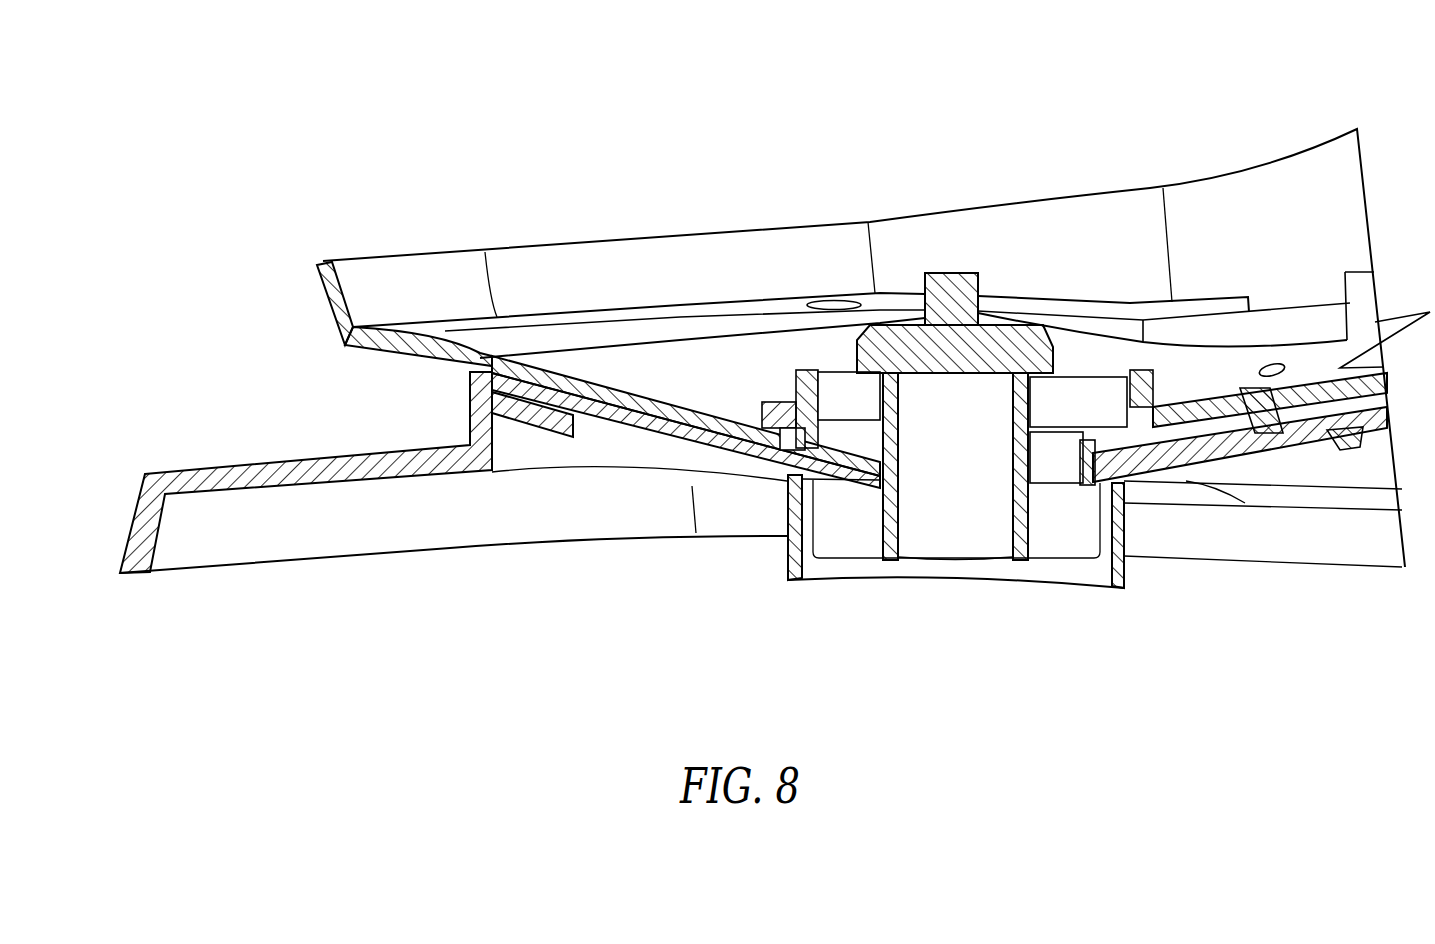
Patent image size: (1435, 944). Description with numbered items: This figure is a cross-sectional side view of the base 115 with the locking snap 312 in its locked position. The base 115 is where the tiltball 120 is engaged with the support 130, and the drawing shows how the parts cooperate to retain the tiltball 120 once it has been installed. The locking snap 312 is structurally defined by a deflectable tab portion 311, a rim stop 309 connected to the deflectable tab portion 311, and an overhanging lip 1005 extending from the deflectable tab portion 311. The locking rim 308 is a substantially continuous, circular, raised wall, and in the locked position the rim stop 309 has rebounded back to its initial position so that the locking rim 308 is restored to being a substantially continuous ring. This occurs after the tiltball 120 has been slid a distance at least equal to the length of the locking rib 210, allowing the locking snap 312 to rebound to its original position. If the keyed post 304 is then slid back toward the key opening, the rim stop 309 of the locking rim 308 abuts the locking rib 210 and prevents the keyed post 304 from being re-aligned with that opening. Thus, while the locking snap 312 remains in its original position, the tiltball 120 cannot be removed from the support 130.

The base 115 is at (418, 100).
The tiltball 120 is at (320, 302).
The support 130 is at (370, 447).
The locking rib 210 is at (792, 424).
The keyed post 304 is at (985, 266).
The locking rim 308 is at (1068, 445).
The rim stop 309 is at (818, 432).
The deflectable tab portion 311 is at (665, 440).
The locking snap 312 is at (763, 478).
The overhanging lip 1005 is at (845, 480).